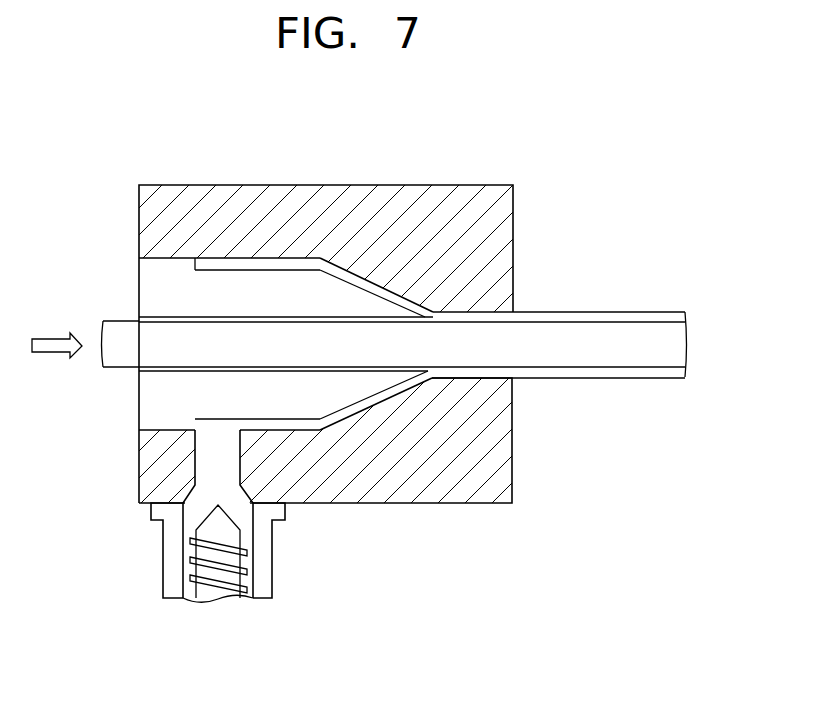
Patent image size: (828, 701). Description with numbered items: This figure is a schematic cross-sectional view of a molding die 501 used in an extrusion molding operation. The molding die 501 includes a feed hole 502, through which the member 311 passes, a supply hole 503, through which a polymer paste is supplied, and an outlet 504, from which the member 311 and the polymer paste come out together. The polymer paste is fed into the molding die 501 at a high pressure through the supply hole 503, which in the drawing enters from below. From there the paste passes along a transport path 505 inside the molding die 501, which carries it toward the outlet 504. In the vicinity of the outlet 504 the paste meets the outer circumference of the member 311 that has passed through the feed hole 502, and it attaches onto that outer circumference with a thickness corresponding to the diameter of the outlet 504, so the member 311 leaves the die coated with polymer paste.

The molding die 501 is at (300, 195).
The feed hole 502 is at (167, 318).
The supply hole 503 is at (210, 460).
The outlet 504 is at (500, 311).
The transport path 505 is at (355, 408).
The member 311 is at (118, 370).